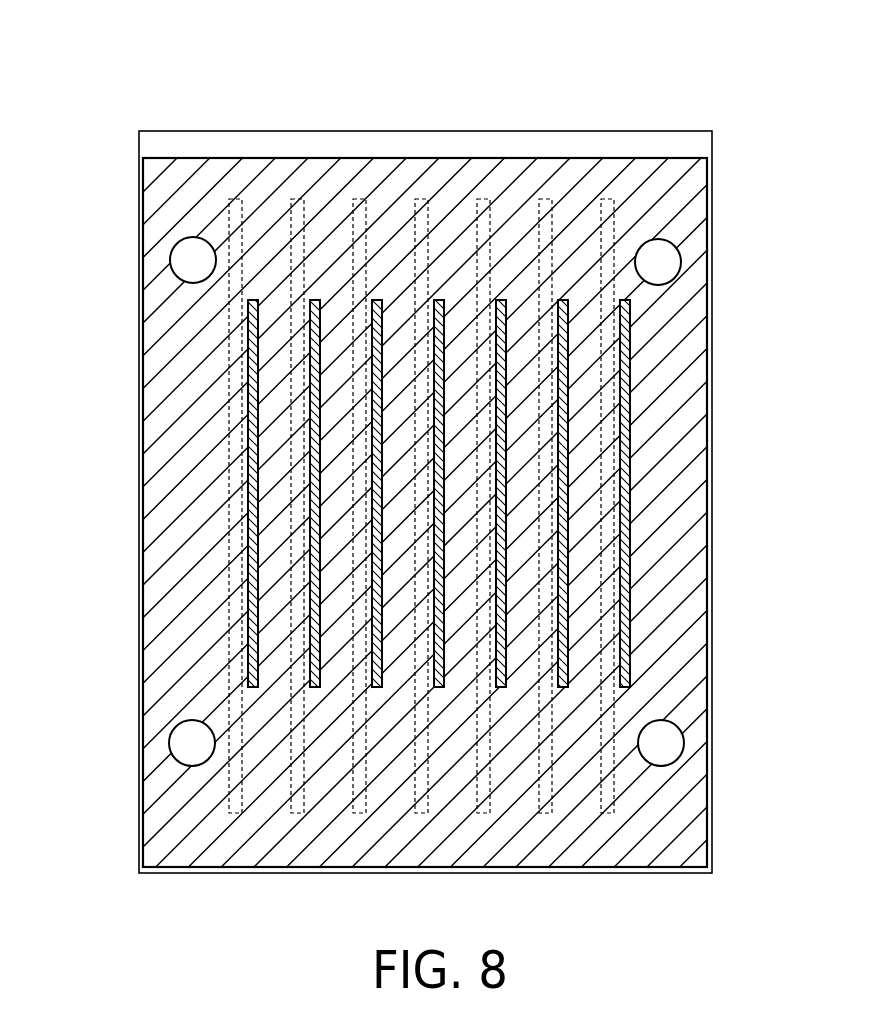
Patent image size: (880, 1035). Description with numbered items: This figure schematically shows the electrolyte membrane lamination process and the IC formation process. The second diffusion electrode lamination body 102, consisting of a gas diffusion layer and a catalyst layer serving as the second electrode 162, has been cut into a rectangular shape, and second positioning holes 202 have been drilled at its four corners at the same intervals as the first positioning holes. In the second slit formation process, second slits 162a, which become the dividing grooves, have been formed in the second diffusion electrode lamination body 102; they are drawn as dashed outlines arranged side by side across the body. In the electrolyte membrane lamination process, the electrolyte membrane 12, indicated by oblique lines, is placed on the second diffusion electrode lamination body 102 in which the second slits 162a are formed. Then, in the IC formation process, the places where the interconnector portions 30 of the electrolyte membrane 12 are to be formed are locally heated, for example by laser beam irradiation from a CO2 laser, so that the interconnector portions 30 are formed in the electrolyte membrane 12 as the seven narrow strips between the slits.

The second diffusion electrode lamination body 102 is at (184, 148).
The second electrode 162 is at (369, 459).
The electrolyte membrane 12 is at (640, 178).
The second slits 162a is at (603, 200).
The second positioning holes 202 is at (193, 260).
The interconnector portions 30 is at (620, 683).